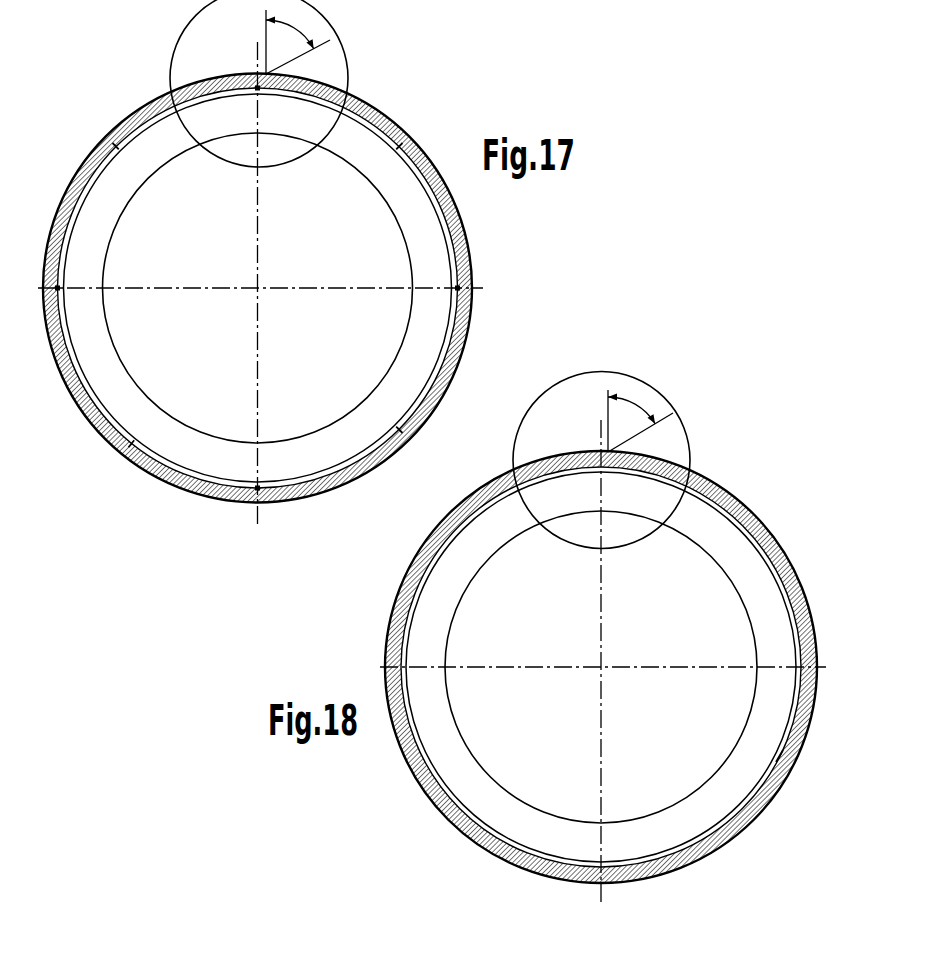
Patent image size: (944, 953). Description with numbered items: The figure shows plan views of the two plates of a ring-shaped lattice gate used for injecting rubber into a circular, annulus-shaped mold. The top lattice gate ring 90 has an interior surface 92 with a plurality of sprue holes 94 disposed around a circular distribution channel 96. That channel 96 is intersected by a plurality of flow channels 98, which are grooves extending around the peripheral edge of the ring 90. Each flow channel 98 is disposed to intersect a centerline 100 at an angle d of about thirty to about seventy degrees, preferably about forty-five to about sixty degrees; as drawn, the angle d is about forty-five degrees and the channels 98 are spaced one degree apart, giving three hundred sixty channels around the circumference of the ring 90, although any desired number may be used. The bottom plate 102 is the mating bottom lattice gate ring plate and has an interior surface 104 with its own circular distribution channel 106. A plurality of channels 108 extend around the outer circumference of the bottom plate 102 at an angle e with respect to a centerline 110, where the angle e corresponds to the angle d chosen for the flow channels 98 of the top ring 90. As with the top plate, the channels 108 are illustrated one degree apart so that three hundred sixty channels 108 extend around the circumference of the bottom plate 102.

In FIG. 17, the top lattice gate ring 90 is at (420, 116).
In FIG. 17, the interior surface 92 is at (438, 258).
In FIG. 17, the sprue holes 94 is at (56, 284).
In FIG. 17, the circular distribution channel 96 is at (130, 447).
In FIG. 17, the flow channels 98 is at (138, 114).
In FIG. 17, the centerline 100 is at (266, 33).
In FIG. 18, the bottom plate 102 is at (808, 556).
In FIG. 18, the interior surface 104 is at (700, 517).
In FIG. 18, the circular distribution channel 106 is at (780, 756).
In FIG. 18, the channels 108 is at (403, 743).
In FIG. 18, the centerline 110 is at (608, 409).